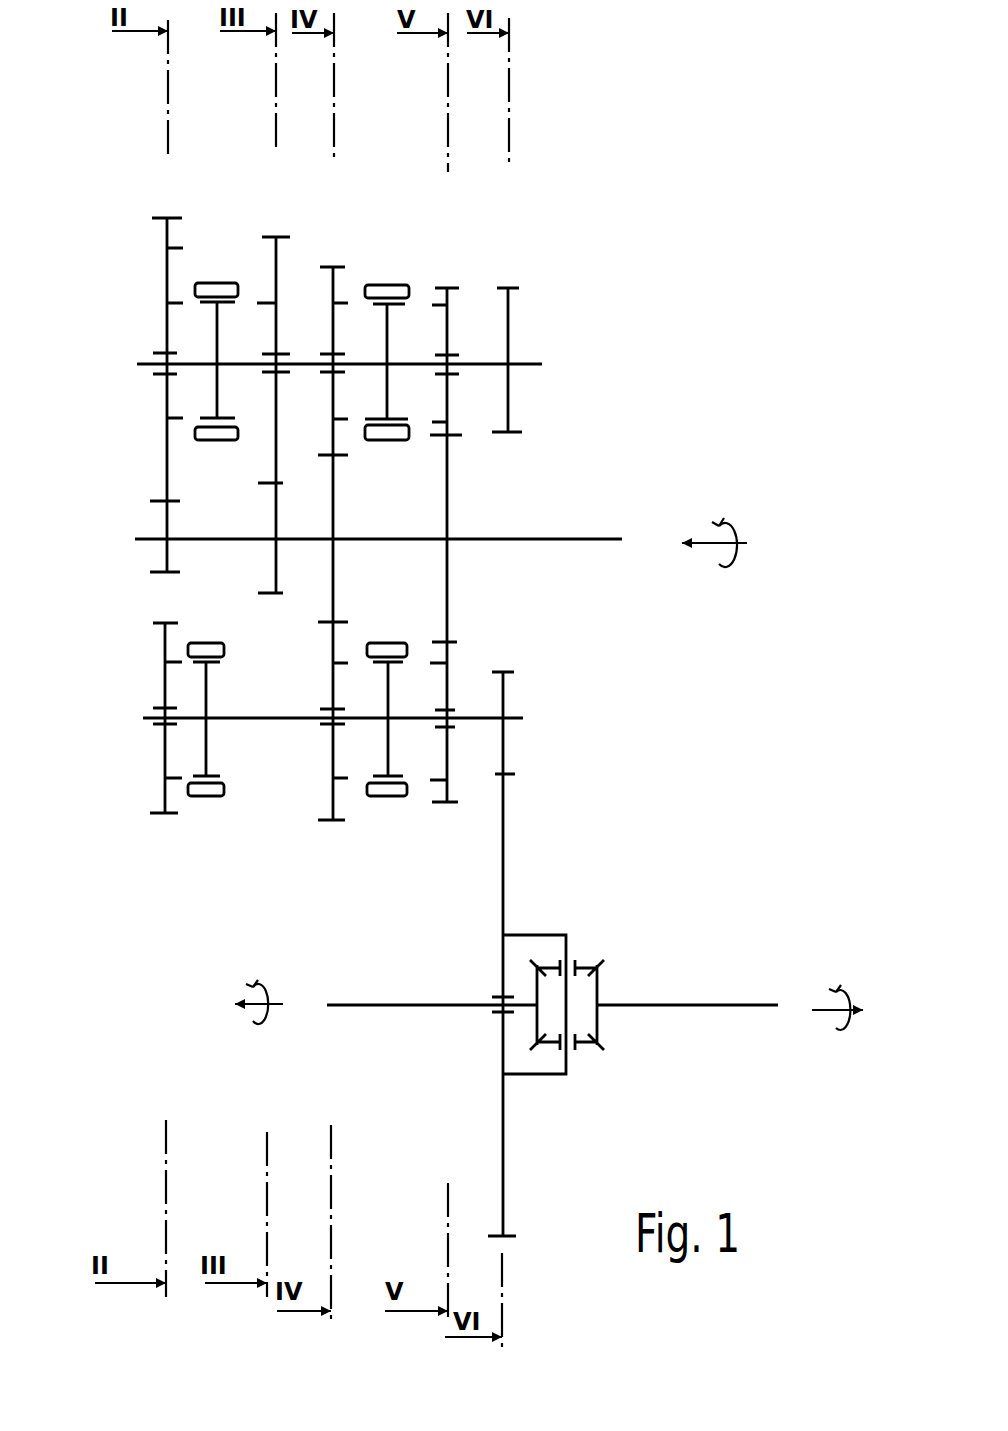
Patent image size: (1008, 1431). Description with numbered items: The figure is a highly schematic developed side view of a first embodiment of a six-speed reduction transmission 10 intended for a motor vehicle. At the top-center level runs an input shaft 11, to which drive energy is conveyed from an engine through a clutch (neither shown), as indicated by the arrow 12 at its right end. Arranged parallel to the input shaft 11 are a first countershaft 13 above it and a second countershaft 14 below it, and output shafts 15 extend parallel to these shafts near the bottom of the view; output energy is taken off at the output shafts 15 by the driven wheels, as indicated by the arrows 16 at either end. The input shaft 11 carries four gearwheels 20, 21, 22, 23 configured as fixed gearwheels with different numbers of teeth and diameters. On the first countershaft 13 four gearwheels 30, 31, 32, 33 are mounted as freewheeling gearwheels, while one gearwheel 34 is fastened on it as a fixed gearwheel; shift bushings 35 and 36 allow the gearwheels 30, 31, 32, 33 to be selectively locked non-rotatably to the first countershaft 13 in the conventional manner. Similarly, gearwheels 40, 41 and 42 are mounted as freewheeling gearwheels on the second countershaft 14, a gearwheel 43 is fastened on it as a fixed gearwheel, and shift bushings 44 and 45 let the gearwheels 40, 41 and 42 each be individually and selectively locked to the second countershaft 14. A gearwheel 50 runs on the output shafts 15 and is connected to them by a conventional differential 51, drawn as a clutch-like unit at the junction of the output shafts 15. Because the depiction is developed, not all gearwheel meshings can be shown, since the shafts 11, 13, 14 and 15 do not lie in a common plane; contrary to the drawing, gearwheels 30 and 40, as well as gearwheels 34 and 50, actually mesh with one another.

The six-speed reduction transmission 10 is at (586, 228).
The input shaft 11 is at (580, 539).
The arrow 12 is at (745, 543).
The first countershaft 13 is at (528, 364).
The second countershaft 14 is at (520, 718).
The output shafts 15 is at (395, 1004).
The arrows 16 is at (278, 1004).
The gearwheel 20 is at (172, 510).
The gearwheel 21 is at (279, 503).
The gearwheel 22 is at (336, 490).
The gearwheel 23 is at (447, 492).
The gearwheel 30 is at (183, 248).
The gearwheel 31 is at (276, 268).
The gearwheel 32 is at (333, 327).
The gearwheel 33 is at (447, 325).
The gearwheel 34 is at (508, 307).
The shift bushing 35 is at (222, 290).
The shift bushing 36 is at (393, 290).
The gearwheel 40 is at (165, 683).
The gearwheel 41 is at (330, 683).
The gearwheel 42 is at (447, 685).
The gearwheel 43 is at (507, 752).
The shift bushing 44 is at (210, 645).
The shift bushing 45 is at (393, 645).
The gearwheel 50 is at (505, 858).
The differential 51 is at (605, 952).